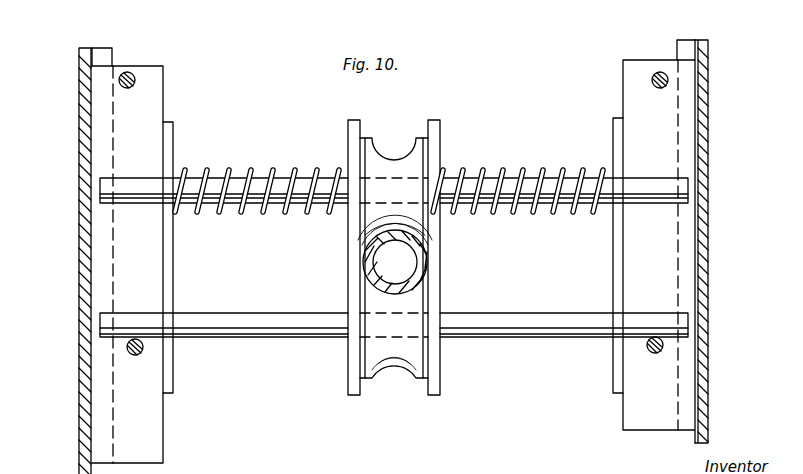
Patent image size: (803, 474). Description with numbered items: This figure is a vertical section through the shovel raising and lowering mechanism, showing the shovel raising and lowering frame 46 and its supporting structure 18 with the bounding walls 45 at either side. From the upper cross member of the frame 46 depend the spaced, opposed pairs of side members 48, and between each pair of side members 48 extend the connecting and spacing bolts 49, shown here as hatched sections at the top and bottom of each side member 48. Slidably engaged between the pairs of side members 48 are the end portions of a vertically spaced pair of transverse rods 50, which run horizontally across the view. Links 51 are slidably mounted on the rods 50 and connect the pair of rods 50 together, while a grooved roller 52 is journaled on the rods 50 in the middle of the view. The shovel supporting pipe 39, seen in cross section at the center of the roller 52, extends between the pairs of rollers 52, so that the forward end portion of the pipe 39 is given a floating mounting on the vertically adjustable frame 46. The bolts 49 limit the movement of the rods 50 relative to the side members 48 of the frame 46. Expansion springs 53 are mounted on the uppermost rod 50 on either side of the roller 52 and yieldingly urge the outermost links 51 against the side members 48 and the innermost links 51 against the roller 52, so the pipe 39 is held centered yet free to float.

The frame 18 is at (393, 35).
The shovel supporting pipe 39 is at (425, 270).
The side wall 45 is at (83, 72).
The shovel raising and lowering frame 46 is at (163, 93).
The side member 48 is at (633, 103).
The connecting and spacing bolt 49 is at (131, 73).
The transverse rod 50 is at (253, 328).
The link 51 is at (175, 256).
The grooved roller 52 is at (380, 152).
The expansion spring 53 is at (250, 168).